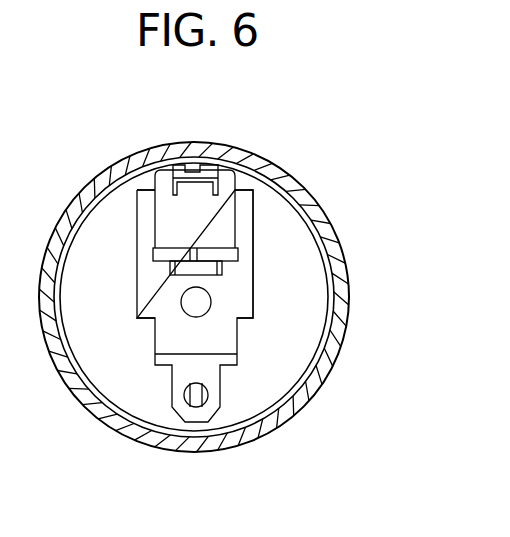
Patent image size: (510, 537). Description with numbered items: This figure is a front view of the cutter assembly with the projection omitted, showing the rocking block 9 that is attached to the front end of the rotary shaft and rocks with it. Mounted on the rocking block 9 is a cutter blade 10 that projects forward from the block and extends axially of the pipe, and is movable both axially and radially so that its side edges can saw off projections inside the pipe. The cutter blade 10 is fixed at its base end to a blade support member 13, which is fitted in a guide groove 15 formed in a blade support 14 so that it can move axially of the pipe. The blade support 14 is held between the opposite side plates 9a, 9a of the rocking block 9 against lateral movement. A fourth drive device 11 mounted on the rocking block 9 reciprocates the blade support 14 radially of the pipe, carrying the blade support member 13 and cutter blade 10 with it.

The rocking block 9 is at (150, 297).
The side plates 9a is at (146, 210).
The cutter blade 10 is at (191, 164).
The fourth drive device 11 is at (193, 260).
The blade support member 13 is at (243, 173).
The blade support 14 is at (230, 213).
The guide groove 15 is at (160, 168).